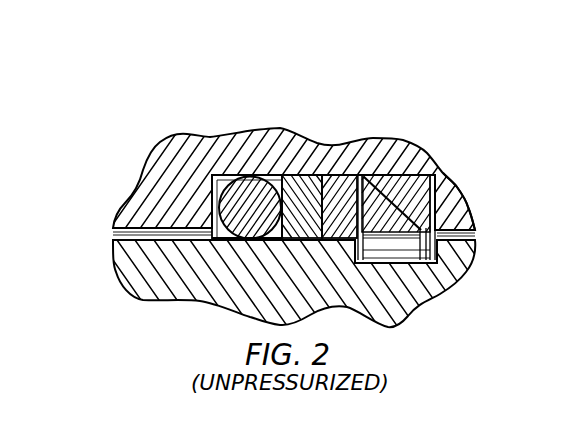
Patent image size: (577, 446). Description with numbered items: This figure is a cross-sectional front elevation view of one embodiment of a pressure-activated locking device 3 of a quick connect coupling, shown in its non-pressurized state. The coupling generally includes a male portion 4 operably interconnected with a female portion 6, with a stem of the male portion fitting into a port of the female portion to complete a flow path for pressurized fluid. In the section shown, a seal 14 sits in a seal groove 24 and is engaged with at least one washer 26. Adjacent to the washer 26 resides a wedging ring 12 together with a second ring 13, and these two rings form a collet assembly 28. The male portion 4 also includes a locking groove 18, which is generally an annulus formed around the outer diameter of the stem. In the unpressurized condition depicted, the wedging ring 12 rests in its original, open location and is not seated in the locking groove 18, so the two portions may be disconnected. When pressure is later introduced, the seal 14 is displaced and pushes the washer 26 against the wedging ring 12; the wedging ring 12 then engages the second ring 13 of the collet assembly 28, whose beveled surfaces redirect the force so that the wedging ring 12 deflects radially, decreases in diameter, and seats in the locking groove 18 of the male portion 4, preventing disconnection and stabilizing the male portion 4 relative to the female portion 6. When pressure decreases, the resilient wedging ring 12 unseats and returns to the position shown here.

The seal assembly 3 is at (132, 137).
The male portion 4 is at (402, 264).
The female portion 6 is at (312, 148).
The wedging ring 12 is at (392, 216).
The second ring 13 is at (448, 208).
The seal 14 is at (248, 192).
The locking groove 18 is at (450, 258).
The seal groove 24 is at (203, 175).
The washer 26 is at (313, 198).
The collet assembly 28 is at (440, 192).